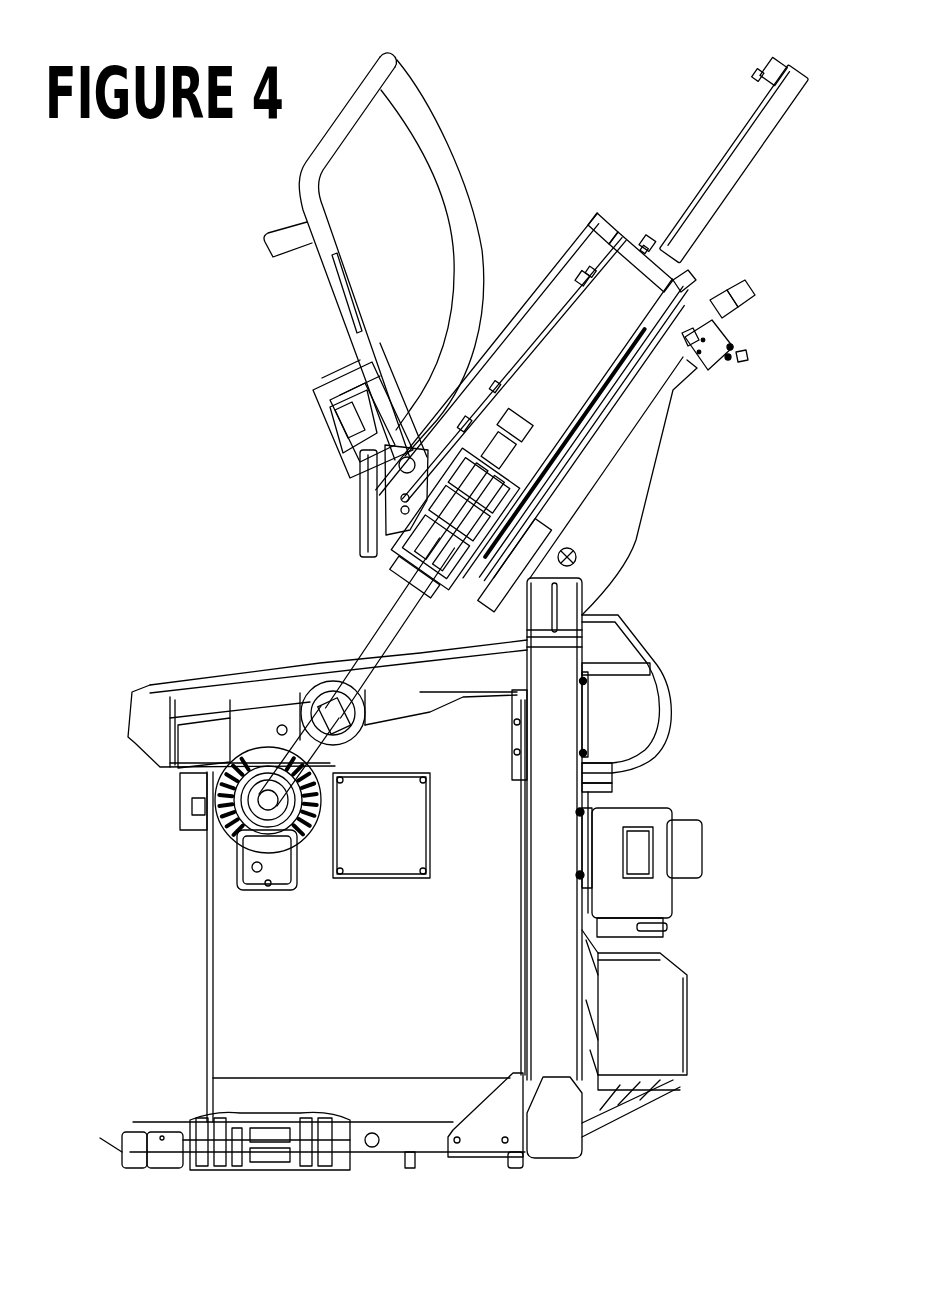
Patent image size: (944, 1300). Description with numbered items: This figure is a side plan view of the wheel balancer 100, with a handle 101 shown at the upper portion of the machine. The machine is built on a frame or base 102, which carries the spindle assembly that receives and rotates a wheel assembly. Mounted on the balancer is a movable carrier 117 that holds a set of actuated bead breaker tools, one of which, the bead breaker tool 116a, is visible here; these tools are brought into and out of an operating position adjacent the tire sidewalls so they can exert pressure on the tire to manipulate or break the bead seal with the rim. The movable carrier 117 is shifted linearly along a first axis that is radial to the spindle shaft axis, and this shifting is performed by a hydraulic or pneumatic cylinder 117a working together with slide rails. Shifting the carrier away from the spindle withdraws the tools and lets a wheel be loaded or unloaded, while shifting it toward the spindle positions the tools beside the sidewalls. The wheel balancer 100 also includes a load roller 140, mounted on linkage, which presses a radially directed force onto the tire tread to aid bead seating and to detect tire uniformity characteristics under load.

The wheel balancer 100 is at (193, 448).
The handle 101 is at (405, 208).
The frame or base 102 is at (213, 969).
The bead breaker tool 116a is at (350, 633).
The movable carrier 117 is at (540, 536).
The hydraulic or pneumatic cylinder 117a is at (745, 194).
The load roller 140 is at (500, 676).